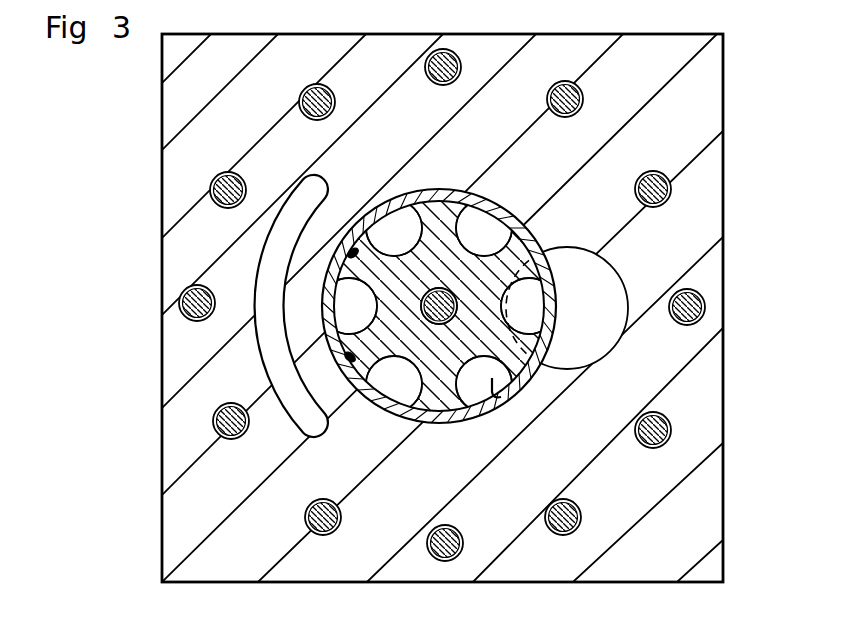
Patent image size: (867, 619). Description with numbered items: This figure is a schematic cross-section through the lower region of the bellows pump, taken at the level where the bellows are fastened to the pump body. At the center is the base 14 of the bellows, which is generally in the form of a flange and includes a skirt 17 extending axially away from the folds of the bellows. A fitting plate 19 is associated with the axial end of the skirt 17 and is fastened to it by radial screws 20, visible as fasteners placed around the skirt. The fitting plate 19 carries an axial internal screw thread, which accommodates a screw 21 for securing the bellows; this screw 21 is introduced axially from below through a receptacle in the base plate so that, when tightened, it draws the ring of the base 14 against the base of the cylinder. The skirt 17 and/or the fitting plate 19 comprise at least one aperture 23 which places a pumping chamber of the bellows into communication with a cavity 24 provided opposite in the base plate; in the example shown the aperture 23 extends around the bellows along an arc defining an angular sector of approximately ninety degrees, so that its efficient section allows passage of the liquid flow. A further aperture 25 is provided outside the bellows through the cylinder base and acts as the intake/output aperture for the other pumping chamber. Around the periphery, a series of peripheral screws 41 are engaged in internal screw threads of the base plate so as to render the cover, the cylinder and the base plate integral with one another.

The base 14 is at (493, 398).
The skirt 17 is at (528, 221).
The fitting plate 19 is at (533, 248).
The radial screws 20 is at (289, 418).
The screw 21 is at (343, 324).
The aperture 23 is at (541, 317).
The cavity 24 is at (605, 272).
The aperture 25 is at (421, 304).
The peripheral screws 41 is at (299, 103).